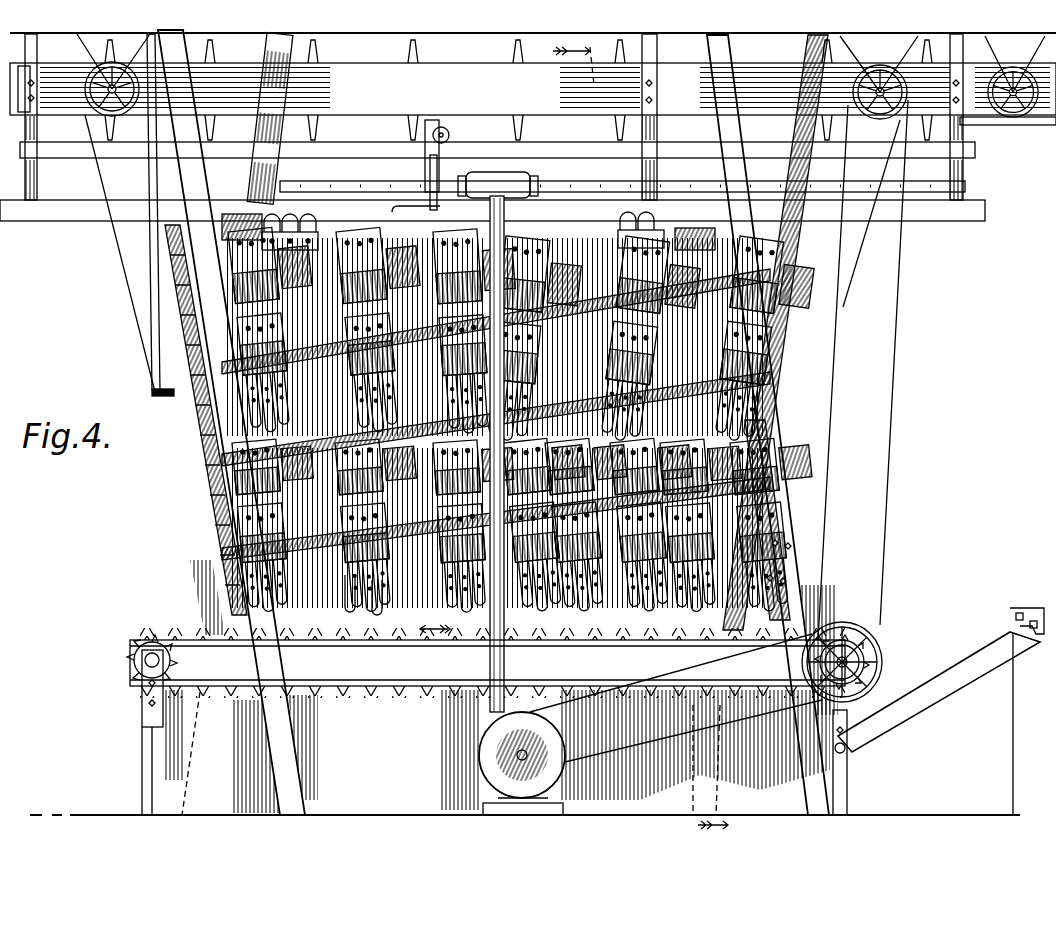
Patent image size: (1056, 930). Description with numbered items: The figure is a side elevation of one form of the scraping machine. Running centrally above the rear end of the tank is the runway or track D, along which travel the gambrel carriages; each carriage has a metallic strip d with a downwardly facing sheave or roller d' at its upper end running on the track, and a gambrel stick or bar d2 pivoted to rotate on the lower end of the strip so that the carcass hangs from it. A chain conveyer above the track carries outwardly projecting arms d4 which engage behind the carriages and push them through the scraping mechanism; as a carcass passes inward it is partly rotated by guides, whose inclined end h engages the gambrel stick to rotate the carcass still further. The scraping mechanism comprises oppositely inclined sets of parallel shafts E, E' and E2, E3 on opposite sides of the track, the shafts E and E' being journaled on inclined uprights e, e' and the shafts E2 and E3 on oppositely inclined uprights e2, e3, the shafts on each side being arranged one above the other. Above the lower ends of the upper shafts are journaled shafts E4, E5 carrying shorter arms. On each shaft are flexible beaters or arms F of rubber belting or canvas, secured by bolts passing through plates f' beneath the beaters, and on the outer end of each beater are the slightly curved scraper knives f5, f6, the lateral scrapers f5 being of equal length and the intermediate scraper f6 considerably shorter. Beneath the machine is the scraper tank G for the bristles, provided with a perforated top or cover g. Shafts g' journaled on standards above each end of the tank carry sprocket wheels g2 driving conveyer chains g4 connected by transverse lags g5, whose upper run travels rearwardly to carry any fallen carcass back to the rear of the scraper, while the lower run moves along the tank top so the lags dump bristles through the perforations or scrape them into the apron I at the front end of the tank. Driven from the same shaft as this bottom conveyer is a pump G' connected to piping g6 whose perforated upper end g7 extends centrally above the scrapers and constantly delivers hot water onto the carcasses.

The runway or track D is at (555, 148).
The outwardly projecting arms d4 is at (415, 58).
The section line a is at (649, 431).
The downwardly facing sheave or roller d' is at (452, 154).
The metallic strip d is at (447, 182).
The gambrel stick or bar d2 is at (407, 196).
The inclined end of guide section h is at (467, 200).
The perforated upper end of piping g7 is at (585, 186).
The scraper shaft E is at (435, 321).
The scraper shaft E' is at (203, 420).
The carriage E'' is at (291, 233).
The scraper shaft E2 is at (703, 392).
The scraper shaft E3 is at (735, 548).
The shaft E4 is at (158, 264).
The shaft E5 is at (813, 250).
The upright e is at (255, 422).
The upright e' is at (858, 762).
The oppositely inclined upright e2 is at (195, 578).
The oppositely inclined upright e3 is at (735, 605).
The flexible beaters or arms F is at (345, 572).
The plates f' is at (342, 597).
The scraper knives f5 is at (378, 605).
The intermediate scraper f6 is at (372, 606).
The perforated top or cover g is at (487, 686).
The shafts g' is at (488, 635).
The sprocket wheels g2 is at (880, 656).
The conveyer chains g4 is at (487, 674).
The transverse lags g5 is at (652, 632).
The piping g6 is at (498, 620).
The scraper tank G is at (160, 732).
The pump G' is at (484, 763).
The apron I is at (941, 711).